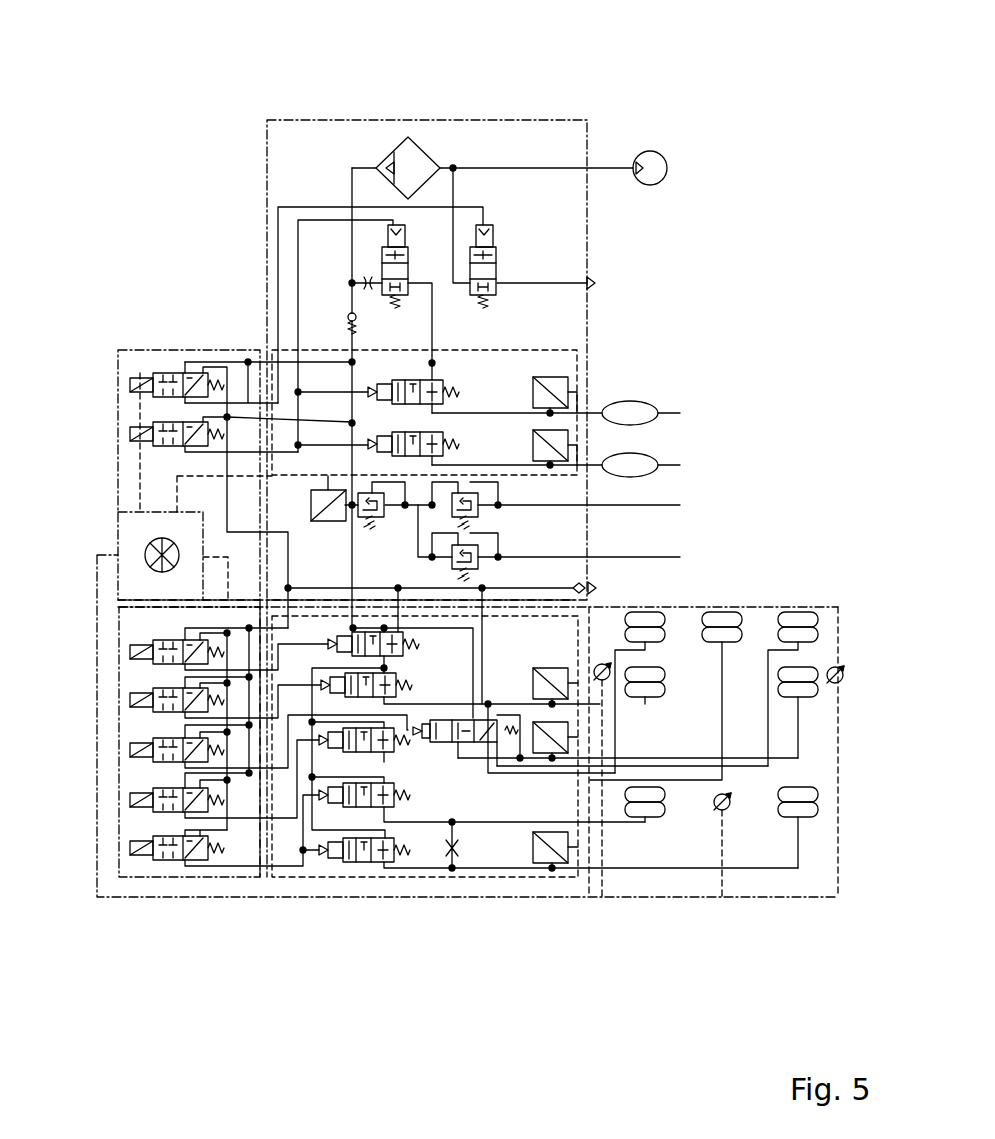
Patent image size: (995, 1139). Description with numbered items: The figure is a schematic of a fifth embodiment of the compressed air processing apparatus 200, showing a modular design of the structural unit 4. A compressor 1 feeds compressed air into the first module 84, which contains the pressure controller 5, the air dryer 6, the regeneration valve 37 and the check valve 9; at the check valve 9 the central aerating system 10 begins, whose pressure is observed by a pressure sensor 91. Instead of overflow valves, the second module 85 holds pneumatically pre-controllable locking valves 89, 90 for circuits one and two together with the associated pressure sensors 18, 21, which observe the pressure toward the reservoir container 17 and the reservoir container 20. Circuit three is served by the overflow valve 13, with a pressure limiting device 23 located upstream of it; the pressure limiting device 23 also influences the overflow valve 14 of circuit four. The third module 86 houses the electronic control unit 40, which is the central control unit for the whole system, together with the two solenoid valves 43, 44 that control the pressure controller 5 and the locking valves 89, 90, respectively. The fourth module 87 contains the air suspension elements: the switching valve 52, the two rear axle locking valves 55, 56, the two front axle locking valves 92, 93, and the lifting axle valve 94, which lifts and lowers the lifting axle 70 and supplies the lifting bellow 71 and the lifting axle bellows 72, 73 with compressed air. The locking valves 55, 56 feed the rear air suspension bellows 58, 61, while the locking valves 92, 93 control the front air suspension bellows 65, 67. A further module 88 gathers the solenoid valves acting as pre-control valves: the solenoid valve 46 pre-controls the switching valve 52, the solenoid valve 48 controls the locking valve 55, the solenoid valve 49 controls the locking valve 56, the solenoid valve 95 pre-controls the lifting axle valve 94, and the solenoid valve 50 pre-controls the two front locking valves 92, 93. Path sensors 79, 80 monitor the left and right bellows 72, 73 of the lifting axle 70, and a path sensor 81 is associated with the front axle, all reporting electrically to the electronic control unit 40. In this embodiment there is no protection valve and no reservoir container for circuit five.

The compressed air processing apparatus 200 is at (133, 140).
The regeneration valve 37 is at (370, 250).
The air dryer 6 is at (430, 140).
The structural unit 4 is at (465, 118).
The first module 84 is at (527, 118).
The compressor 1 is at (652, 160).
The pressure controller 5 is at (515, 265).
The locking valve 89 is at (462, 380).
The locking valve 90 is at (465, 440).
The second module 85 is at (590, 372).
The pressure sensor 18 is at (570, 382).
The reservoir container 17 is at (655, 410).
The pressure sensor 21 is at (570, 440).
The reservoir container 20 is at (655, 462).
The overflow valve 13 is at (517, 491).
The overflow valve 14 is at (517, 545).
The third module 86 is at (168, 350).
The check valve 9 is at (348, 316).
The first solenoid valve 43 is at (128, 385).
The second solenoid valve 44 is at (128, 434).
The central aerating system 10 is at (350, 462).
The pressure sensor 91 is at (311, 502).
The electronic control unit 40 is at (132, 529).
The pressure limiting device 23 is at (375, 540).
The fourth solenoid valve 46 is at (128, 652).
The sixth solenoid valve 48 is at (128, 700).
The solenoid valve 95 is at (128, 750).
The seventh solenoid valve 49 is at (128, 800).
The solenoid valve 50 is at (128, 848).
The switching valve 52 is at (415, 658).
The locking valve 55 is at (413, 683).
The locking valve 56 is at (362, 760).
The locking valve 93 is at (424, 852).
The locking valve 92 is at (425, 797).
The lifting axle valve 94 is at (458, 750).
The lifting axle 70 is at (757, 627).
The air suspension bellows 72 is at (648, 618).
The lifting bellow 71 is at (725, 615).
The air suspension bellows 73 is at (798, 620).
The air suspension bellows 58 is at (655, 672).
The air suspension bellow 61 is at (818, 673).
The air suspension bellow 65 is at (657, 820).
The air suspension bellows 67 is at (803, 818).
The path sensor 79 is at (612, 662).
The path sensor 80 is at (846, 678).
The path sensor 81 is at (727, 811).
The module 88 is at (205, 880).
The fourth module 87 is at (370, 880).